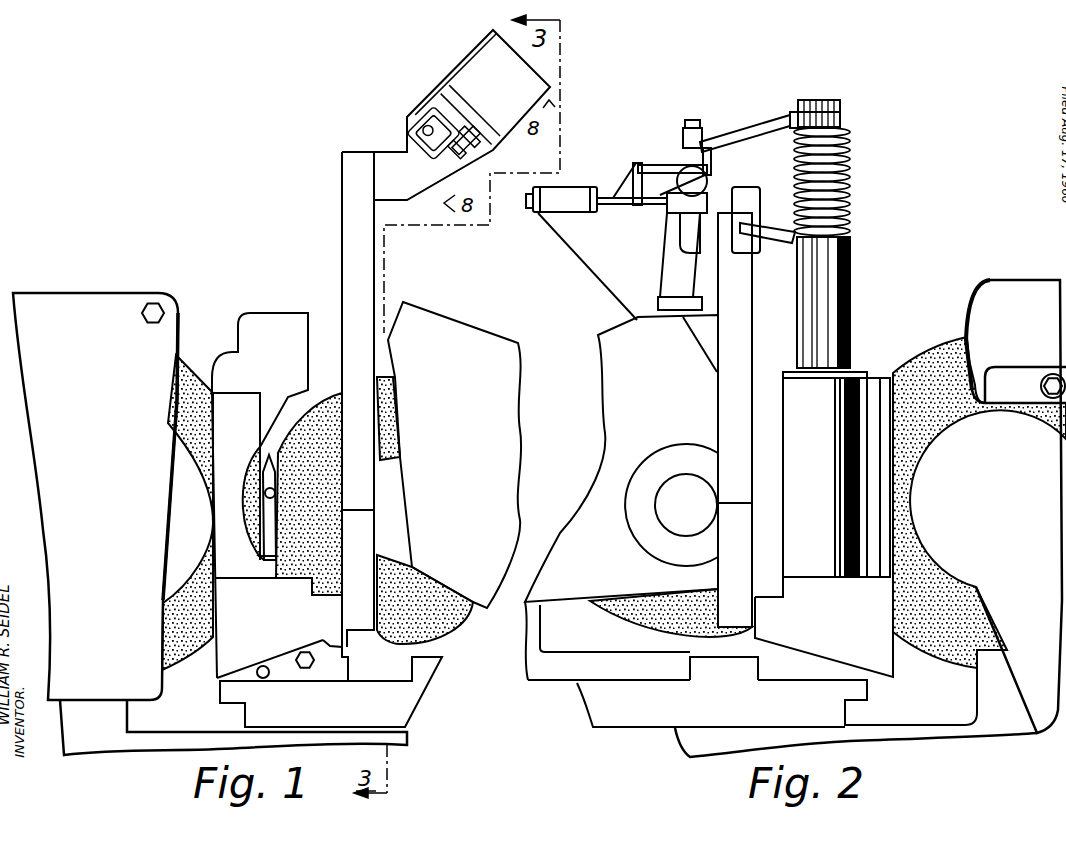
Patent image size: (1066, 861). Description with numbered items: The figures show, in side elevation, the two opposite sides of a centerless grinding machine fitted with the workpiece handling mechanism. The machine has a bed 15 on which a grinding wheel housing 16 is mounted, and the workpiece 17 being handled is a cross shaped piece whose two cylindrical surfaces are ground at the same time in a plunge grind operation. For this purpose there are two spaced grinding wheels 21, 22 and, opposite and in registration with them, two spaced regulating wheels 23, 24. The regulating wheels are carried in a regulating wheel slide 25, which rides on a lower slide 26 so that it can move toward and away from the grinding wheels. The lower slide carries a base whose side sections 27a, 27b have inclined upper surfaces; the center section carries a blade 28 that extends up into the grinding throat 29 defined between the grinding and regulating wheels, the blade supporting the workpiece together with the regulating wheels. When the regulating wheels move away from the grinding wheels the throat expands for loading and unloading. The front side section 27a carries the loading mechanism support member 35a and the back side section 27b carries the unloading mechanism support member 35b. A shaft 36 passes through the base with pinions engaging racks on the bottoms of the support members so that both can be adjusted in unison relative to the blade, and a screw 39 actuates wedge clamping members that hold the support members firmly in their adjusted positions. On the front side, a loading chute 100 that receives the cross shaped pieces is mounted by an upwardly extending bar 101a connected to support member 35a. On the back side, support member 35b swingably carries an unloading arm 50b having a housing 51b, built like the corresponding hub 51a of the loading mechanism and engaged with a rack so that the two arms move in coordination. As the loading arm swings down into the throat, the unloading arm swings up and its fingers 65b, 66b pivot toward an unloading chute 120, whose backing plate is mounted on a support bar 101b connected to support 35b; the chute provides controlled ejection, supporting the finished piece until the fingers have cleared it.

In FIG. 1, the bed 15 is at (130, 756).
In FIG. 2, the bed 15 is at (950, 737).
In FIG. 1, the grinding wheel housing 16 is at (138, 293).
In FIG. 2, the grinding wheel housing 16 is at (990, 280).
In FIG. 1, the workpiece 17 is at (247, 513).
In FIG. 1, the grinding wheel 21 is at (175, 358).
In FIG. 2, the grinding wheel 22 is at (948, 337).
In FIG. 1, the regulating wheel 23 is at (385, 376).
In FIG. 2, the regulating wheel 24 is at (612, 622).
In FIG. 1, the regulating wheel slide 25 is at (455, 294).
In FIG. 2, the regulating wheel slide 25 is at (600, 420).
In FIG. 1, the lower slide 26 is at (422, 703).
In FIG. 2, the lower slide 26 is at (577, 700).
In FIG. 1, the side base section 27a is at (350, 657).
In FIG. 2, the side base section 27b is at (757, 666).
In FIG. 1, the blade 28 is at (259, 556).
In FIG. 1, the grinding throat 29 is at (270, 458).
In FIG. 1, the loading mechanism support member 35a is at (277, 535).
In FIG. 2, the unloading mechanism support member 35b is at (824, 627).
In FIG. 1, the shaft 36 is at (320, 639).
In FIG. 1, the screw 39 is at (263, 665).
In FIG. 2, the unloading arm 50b is at (852, 270).
In FIG. 1, the hub 51a is at (306, 313).
In FIG. 2, the housing 51b is at (836, 474).
In FIG. 2, the finger 65b is at (778, 114).
In FIG. 2, the finger 66b is at (778, 245).
In FIG. 1, the loading chute 100 is at (471, 50).
In FIG. 1, the bar 101a is at (342, 216).
In FIG. 2, the support bar 101b is at (717, 383).
In FIG. 2, the unloading chute 120 is at (636, 163).